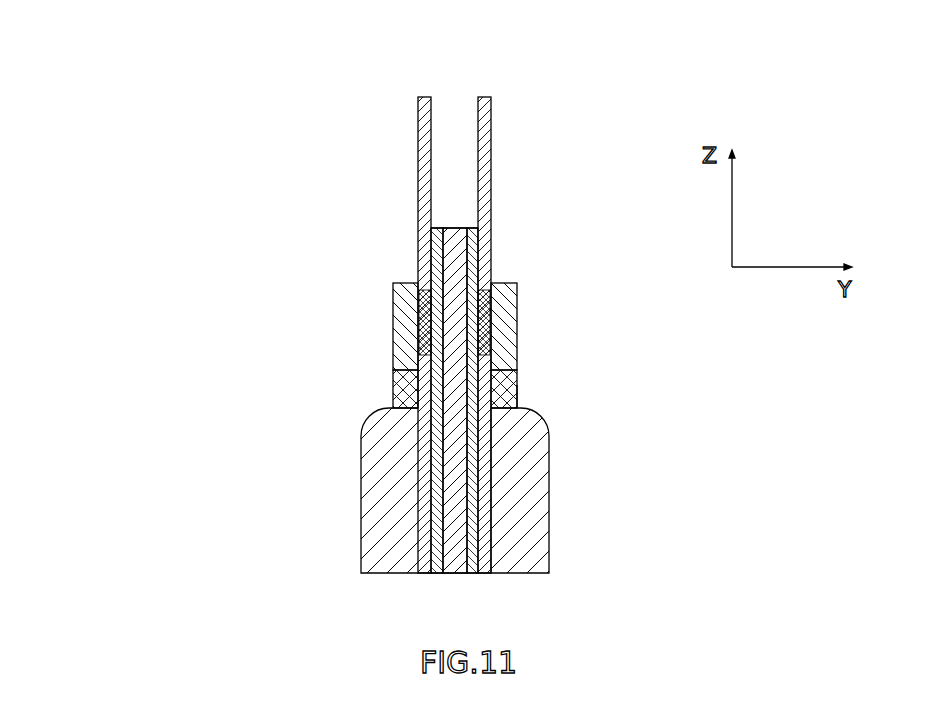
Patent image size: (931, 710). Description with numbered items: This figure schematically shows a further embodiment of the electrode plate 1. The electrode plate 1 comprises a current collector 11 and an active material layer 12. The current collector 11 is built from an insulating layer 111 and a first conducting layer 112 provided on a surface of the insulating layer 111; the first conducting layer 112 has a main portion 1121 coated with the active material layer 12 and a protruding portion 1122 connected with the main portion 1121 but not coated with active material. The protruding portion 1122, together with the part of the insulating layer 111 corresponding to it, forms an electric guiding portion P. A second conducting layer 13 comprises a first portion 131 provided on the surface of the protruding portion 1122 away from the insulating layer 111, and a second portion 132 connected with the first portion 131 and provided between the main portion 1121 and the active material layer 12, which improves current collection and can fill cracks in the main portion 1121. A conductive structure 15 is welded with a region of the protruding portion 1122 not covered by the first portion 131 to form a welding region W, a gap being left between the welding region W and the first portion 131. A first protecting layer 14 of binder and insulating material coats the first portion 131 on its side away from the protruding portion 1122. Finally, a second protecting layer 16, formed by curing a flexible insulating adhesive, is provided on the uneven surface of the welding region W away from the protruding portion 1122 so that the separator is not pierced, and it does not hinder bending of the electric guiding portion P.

The electrode plate 1 is at (138, 278).
The current collector 11 is at (383, 400).
The insulating layer 111 is at (437, 513).
The first conducting layer 112 is at (403, 400).
The main portion 1121 is at (437, 468).
The protruding portion 1122 is at (393, 369).
The active material layer 12 is at (377, 562).
The second conducting layer 13 is at (586, 479).
The first portion 131 is at (517, 395).
The second portion 132 is at (490, 463).
The first protecting layer 14 is at (517, 385).
The conductive structure 15 is at (417, 245).
The second protecting layer 16 is at (500, 283).
The electric guiding portion P is at (457, 217).
The welding region W is at (419, 330).